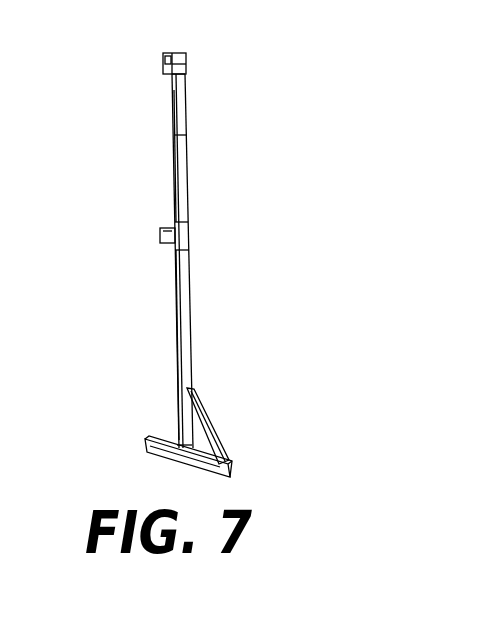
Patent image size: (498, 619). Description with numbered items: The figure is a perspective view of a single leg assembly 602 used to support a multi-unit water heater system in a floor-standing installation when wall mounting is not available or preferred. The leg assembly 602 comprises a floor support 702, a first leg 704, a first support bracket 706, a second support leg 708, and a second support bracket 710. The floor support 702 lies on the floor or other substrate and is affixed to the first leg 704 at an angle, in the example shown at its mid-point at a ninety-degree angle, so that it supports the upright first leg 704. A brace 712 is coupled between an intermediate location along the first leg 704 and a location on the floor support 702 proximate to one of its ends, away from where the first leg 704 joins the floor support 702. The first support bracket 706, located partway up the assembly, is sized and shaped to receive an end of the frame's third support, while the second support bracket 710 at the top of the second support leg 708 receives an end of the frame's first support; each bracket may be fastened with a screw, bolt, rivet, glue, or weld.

The leg assembly 602 is at (188, 120).
The floor support 702 is at (207, 470).
The first leg 704 is at (190, 322).
The first support bracket 706 is at (188, 230).
The second support leg 708 is at (187, 162).
The second support bracket 710 is at (176, 53).
The brace 712 is at (207, 420).